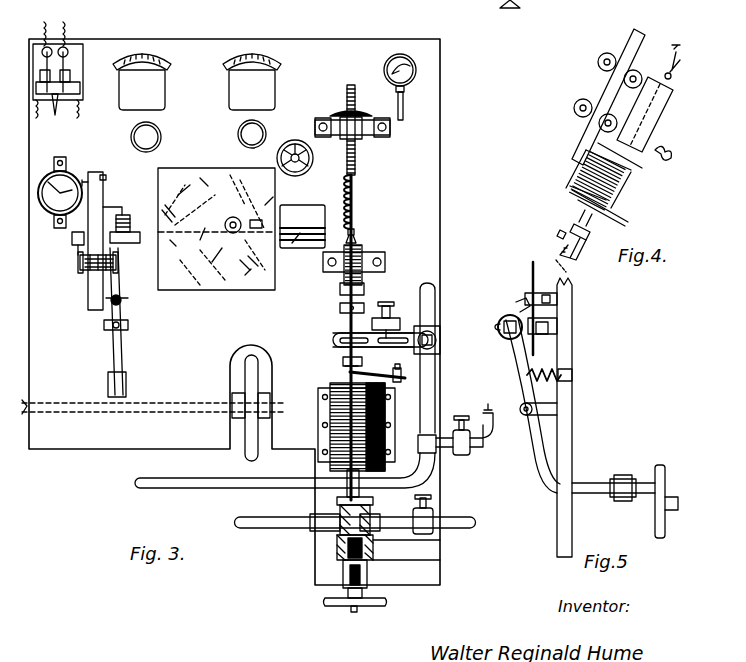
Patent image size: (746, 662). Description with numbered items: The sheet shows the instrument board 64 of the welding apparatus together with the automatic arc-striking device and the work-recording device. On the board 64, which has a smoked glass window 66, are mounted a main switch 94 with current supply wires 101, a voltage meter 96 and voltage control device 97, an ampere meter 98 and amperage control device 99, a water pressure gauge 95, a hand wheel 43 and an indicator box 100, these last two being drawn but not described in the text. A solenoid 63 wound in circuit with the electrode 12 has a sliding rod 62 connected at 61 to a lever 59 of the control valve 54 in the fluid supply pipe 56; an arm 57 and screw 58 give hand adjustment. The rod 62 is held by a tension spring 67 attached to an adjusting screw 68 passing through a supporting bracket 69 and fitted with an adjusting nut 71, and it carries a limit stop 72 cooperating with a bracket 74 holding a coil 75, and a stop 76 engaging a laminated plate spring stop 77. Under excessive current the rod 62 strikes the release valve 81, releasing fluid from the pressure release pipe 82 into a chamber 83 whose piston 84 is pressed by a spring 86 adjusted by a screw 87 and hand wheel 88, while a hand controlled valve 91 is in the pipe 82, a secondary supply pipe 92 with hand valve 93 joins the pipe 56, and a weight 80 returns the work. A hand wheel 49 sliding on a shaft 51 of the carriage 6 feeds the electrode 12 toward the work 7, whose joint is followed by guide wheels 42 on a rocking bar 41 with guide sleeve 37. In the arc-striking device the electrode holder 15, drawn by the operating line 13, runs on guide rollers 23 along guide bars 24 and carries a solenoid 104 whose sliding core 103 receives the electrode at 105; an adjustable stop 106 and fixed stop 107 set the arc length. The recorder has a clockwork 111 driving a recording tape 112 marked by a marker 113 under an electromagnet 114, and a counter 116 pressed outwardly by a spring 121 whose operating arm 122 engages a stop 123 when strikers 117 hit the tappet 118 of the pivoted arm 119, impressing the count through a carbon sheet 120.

In FIG. 5, the traversing carriage 6 is at (664, 540).
In FIG. 3, the work 7 is at (298, 240).
In FIG. 3, the electrode 12 is at (222, 168).
In FIG. 4, the electrode 12 is at (556, 256).
In FIG. 4, the second flexible operating line 13 is at (672, 45).
In FIG. 4, the electrode holder 15 is at (613, 90).
In FIG. 4, the guide rollers 23 is at (612, 54).
In FIG. 4, the guide bars 24 is at (580, 138).
In FIG. 3, the guide sleeve 37 is at (182, 245).
In FIG. 3, the rocking bar 41 is at (268, 202).
In FIG. 3, the guide wheels 42 is at (240, 278).
In FIG. 3, the hand wheel 43 is at (311, 166).
In FIG. 3, the hand wheel 49 is at (245, 370).
In FIG. 3, the shaft 51 is at (172, 415).
In FIG. 3, the control valve 54 is at (435, 338).
In FIG. 3, the fluid supply pipe 56 is at (432, 300).
In FIG. 3, the arm 57 is at (432, 352).
In FIG. 3, the screw 58 is at (396, 296).
In FIG. 3, the lever 59 is at (340, 309).
In FIG. 3, the connection 61 is at (340, 342).
In FIG. 3, the sliding rod 62 is at (343, 361).
In FIG. 3, the solenoid 63 is at (330, 422).
In FIG. 3, the instrument board 64 is at (441, 165).
In FIG. 5, the instrument board 64 is at (570, 342).
In FIG. 3, the window 66 is at (180, 189).
In FIG. 3, the tension spring 67 is at (362, 185).
In FIG. 3, the adjusting screw 68 is at (357, 155).
In FIG. 3, the supporting bracket 69 is at (325, 118).
In FIG. 3, the adjusting nut 71 is at (362, 113).
In FIG. 3, the limit stop 72 is at (340, 290).
In FIG. 3, the bracket 74 is at (362, 252).
In FIG. 3, the coil 75 is at (364, 270).
In FIG. 3, the stop 76 is at (350, 372).
In FIG. 3, the plate spring stop 77 is at (372, 370).
In FIG. 4, the weight 80 is at (512, 14).
In FIG. 3, the release valve 81 is at (340, 540).
In FIG. 3, the pressure release pipe 82 is at (284, 520).
In FIG. 3, the chamber 83 is at (340, 548).
In FIG. 3, the piston 84 is at (343, 572).
In FIG. 3, the spring 86 is at (373, 560).
In FIG. 3, the screw 87 is at (362, 592).
In FIG. 3, the hand wheel 88 is at (370, 610).
In FIG. 3, the hand controlled valve 91 is at (430, 512).
In FIG. 3, the secondary fluid supply pipe 92 is at (490, 406).
In FIG. 3, the hand controlled valve 93 is at (462, 456).
In FIG. 3, the main switch 94 is at (72, 58).
In FIG. 3, the water pressure gauge 95 is at (405, 54).
In FIG. 3, the voltage meter 96 is at (142, 82).
In FIG. 3, the voltage control device 97 is at (131, 134).
In FIG. 3, the ampere meter 98 is at (252, 82).
In FIG. 3, the amperage control device 99 is at (238, 133).
In FIG. 3, the indicator box 100 is at (302, 226).
In FIG. 3, the current supply wires 101 is at (55, 27).
In FIG. 4, the sliding core 103 is at (580, 262).
In FIG. 4, the solenoid 104 is at (625, 185).
In FIG. 4, the attachment 105 is at (570, 230).
In FIG. 4, the adjustable stop 106 is at (580, 214).
In FIG. 4, the fixed stop 107 is at (625, 222).
In FIG. 3, the clockwork 111 is at (66, 172).
In FIG. 3, the recording tape 112 is at (90, 282).
In FIG. 5, the recording tape 112 is at (532, 268).
In FIG. 3, the marker 113 is at (112, 200).
In FIG. 3, the electromagnet 114 is at (127, 243).
In FIG. 3, the counter 116 is at (80, 264).
In FIG. 5, the counter 116 is at (498, 327).
In FIG. 5, the strikers 117 is at (646, 470).
In FIG. 5, the tappet 118 is at (612, 480).
In FIG. 3, the pivoted arm 119 is at (122, 345).
In FIG. 5, the pivoted arm 119 is at (545, 440).
In FIG. 5, the carbon sheet 120 is at (512, 340).
In FIG. 3, the spring 121 is at (122, 300).
In FIG. 5, the spring 121 is at (562, 384).
In FIG. 3, the operating arm 122 is at (76, 246).
In FIG. 5, the operating arm 122 is at (518, 304).
In FIG. 5, the stop 123 is at (557, 296).